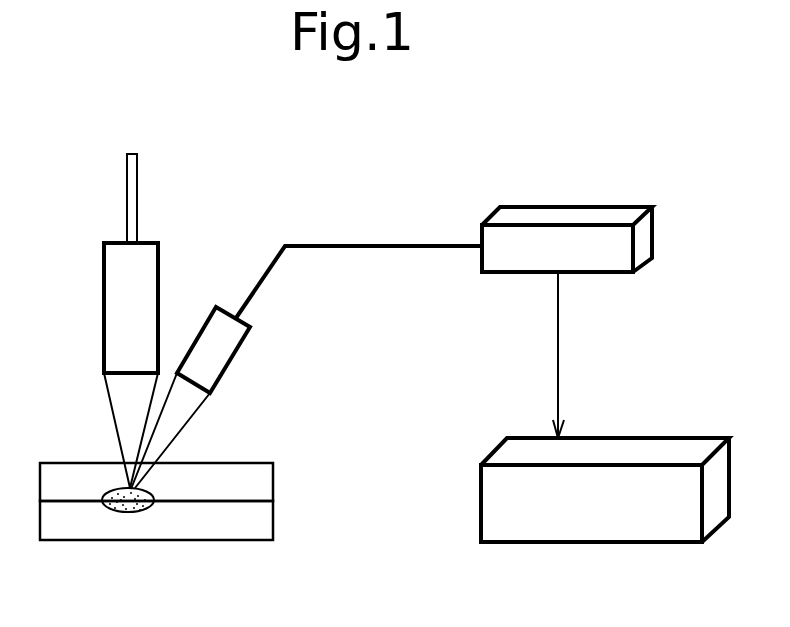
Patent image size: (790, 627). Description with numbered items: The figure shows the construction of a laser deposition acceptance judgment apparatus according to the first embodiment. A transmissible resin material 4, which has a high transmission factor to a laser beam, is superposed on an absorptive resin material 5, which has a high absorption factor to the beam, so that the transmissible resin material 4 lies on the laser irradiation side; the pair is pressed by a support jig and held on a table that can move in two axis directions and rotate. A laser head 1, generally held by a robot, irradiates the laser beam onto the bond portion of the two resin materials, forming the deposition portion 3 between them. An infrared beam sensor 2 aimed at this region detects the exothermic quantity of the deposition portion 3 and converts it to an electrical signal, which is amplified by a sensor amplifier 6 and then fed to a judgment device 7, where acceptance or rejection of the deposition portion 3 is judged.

The laser head 1 is at (152, 255).
The infrared beam sensor 2 is at (244, 322).
The deposition portion 3 is at (147, 493).
The transmissible resin material 4 is at (273, 485).
The absorptive resin material 5 is at (273, 525).
The sensor amplifier 6 is at (598, 210).
The judgment device 7 is at (625, 443).